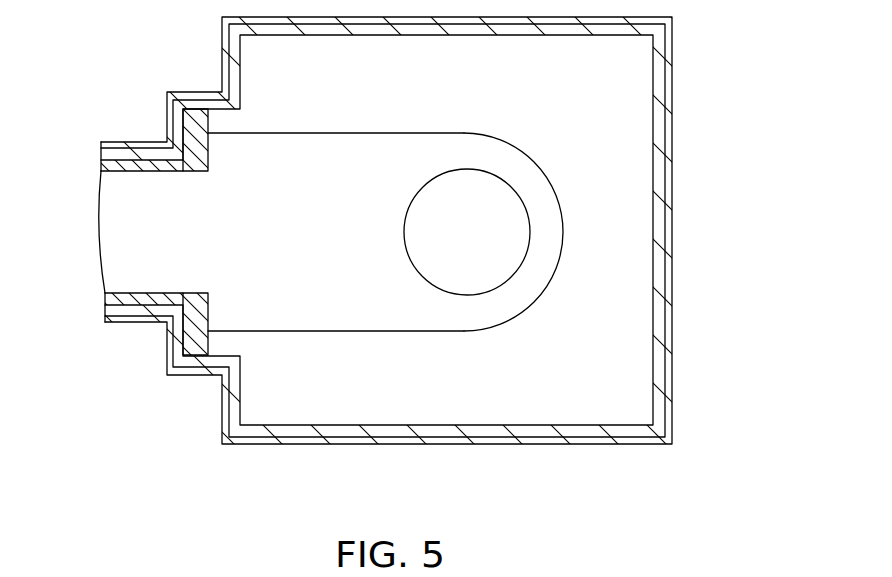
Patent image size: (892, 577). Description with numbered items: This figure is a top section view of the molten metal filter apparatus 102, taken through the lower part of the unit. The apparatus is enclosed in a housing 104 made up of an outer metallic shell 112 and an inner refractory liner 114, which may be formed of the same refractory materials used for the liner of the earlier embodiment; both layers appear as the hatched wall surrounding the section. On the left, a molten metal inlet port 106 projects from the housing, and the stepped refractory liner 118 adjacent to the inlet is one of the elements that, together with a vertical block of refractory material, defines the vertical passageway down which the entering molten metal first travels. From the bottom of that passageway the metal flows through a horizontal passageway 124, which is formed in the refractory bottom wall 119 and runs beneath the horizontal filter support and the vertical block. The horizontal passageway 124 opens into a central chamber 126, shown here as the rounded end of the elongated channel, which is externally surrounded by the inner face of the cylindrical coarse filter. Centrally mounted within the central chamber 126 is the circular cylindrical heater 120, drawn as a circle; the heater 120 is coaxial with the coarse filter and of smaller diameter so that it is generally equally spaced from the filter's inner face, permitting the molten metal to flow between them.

The filter apparatus 102 is at (690, 42).
The housing 104 is at (673, 211).
The molten metal inlet port 106 is at (133, 260).
The metallic shell 112 is at (672, 360).
The refractory liner 114 is at (663, 307).
The refractory liner 118 is at (187, 340).
The refractory bottom wall 119 is at (450, 393).
The cylindrical heater 120 is at (490, 232).
The horizontal passageway 124 is at (333, 248).
The central chamber 126 is at (522, 300).